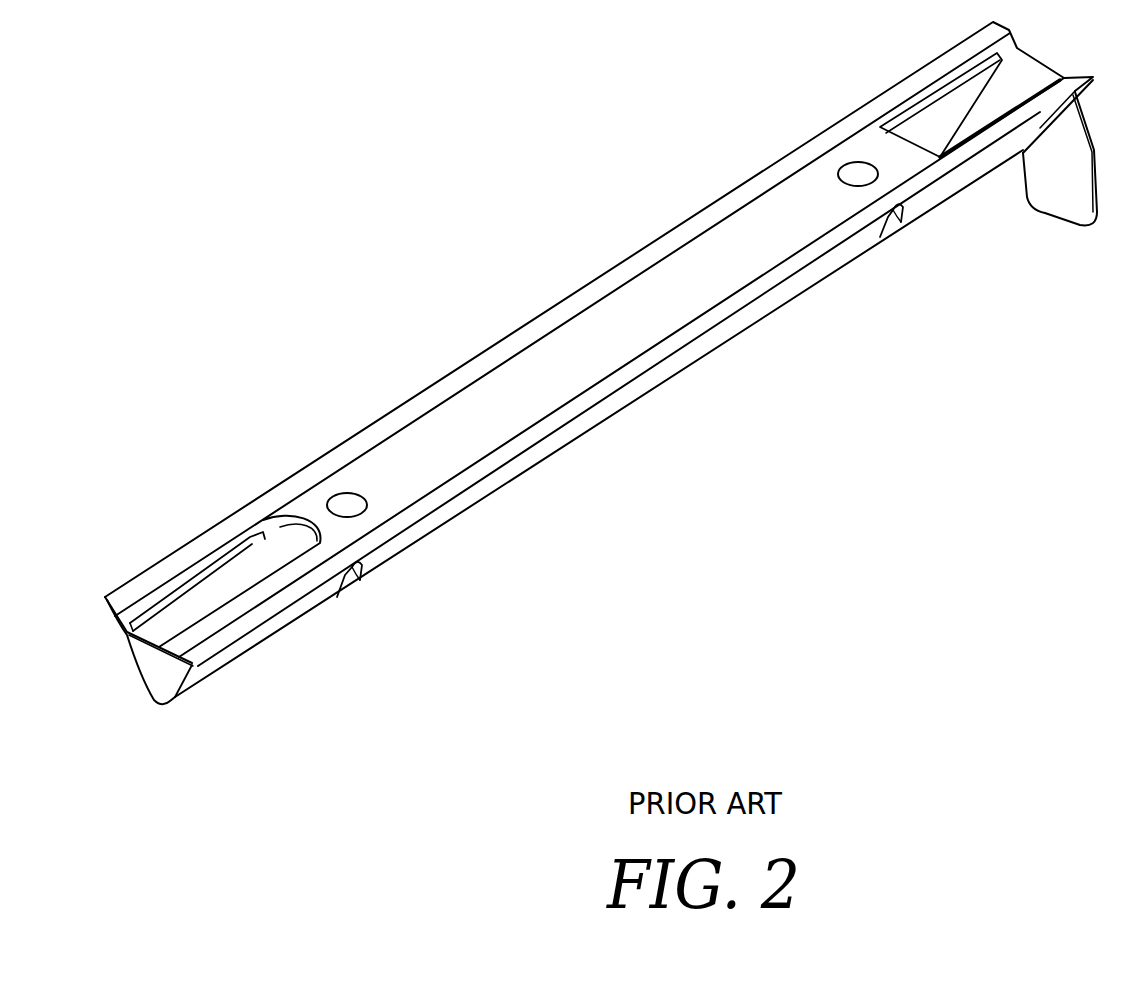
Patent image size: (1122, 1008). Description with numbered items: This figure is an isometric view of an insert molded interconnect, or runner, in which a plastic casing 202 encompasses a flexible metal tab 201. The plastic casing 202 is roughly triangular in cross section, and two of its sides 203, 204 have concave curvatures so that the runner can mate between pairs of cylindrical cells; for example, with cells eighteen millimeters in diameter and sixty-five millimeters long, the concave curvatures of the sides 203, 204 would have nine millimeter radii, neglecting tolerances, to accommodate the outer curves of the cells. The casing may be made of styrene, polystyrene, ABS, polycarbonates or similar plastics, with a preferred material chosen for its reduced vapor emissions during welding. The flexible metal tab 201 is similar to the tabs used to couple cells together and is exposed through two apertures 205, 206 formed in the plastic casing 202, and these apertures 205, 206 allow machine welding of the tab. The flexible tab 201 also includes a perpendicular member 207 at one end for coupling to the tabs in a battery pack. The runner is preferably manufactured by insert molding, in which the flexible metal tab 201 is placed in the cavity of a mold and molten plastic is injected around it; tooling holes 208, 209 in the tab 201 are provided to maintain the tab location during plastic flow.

The flexible metal tab 201 is at (178, 612).
The plastic casing 202 is at (600, 370).
The side 203 is at (260, 632).
The side 204 is at (142, 660).
The aperture 205 is at (197, 562).
The aperture 206 is at (918, 100).
The perpendicular member 207 is at (1053, 197).
The tooling hole 208 is at (350, 500).
The tooling hole 209 is at (858, 172).